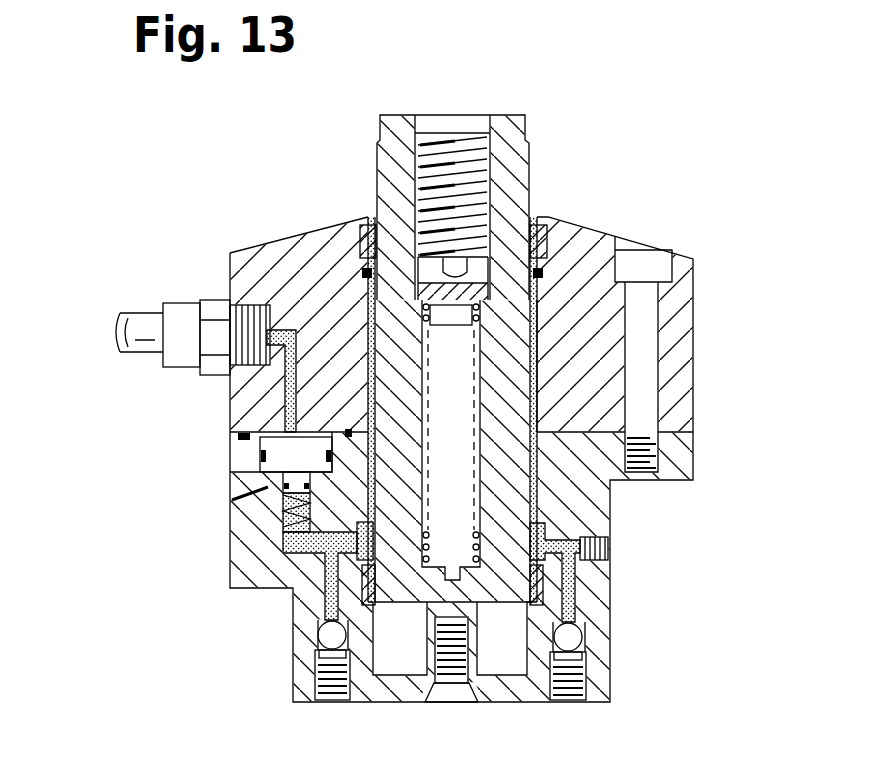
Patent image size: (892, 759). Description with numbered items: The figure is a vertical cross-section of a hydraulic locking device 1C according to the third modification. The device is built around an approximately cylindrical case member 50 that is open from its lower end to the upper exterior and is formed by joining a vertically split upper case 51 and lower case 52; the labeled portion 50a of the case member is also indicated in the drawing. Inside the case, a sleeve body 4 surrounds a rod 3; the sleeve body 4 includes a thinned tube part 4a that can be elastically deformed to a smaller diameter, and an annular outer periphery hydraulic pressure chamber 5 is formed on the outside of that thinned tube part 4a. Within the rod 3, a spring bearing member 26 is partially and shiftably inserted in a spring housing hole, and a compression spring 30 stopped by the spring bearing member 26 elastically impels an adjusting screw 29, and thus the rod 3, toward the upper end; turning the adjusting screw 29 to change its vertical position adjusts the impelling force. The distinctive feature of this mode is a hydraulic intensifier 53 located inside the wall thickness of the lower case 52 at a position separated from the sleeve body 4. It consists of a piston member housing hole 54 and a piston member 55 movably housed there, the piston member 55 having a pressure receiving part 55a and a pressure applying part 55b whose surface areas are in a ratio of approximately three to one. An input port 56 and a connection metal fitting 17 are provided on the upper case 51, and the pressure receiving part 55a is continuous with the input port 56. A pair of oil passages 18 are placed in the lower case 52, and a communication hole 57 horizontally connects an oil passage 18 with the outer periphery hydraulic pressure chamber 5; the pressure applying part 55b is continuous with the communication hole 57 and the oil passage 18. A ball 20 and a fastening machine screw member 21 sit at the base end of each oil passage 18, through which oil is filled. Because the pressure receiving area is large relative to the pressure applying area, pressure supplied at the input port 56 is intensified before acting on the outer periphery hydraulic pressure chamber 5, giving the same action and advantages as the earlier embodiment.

The hydraulic locking device 1C is at (705, 84).
The rod 3 is at (511, 133).
The adjusting screw 29 is at (445, 273).
The sleeve body 4 is at (385, 378).
The thinned tube part 4a is at (352, 433).
The compression spring 30 is at (451, 433).
The outer periphery hydraulic pressure chamber 5 is at (380, 542).
The connection metal fitting 17 is at (240, 333).
The oil passages 18 is at (325, 598).
The ball 20 is at (585, 632).
The fastening machine screw member 21 is at (588, 684).
The spring bearing member 26 is at (427, 660).
The case member 50 is at (690, 222).
The body bore 50a is at (542, 336).
The upper case 51 is at (582, 240).
The lower case 52 is at (606, 497).
The hydraulic intensifier 53 is at (258, 456).
The piston member housing hole 54 is at (272, 483).
The piston member 55 is at (285, 535).
The pressure receiving part 55a is at (308, 432).
The pressure applying part 55b is at (283, 545).
The input port 56 is at (306, 352).
The communication hole 57 is at (340, 540).